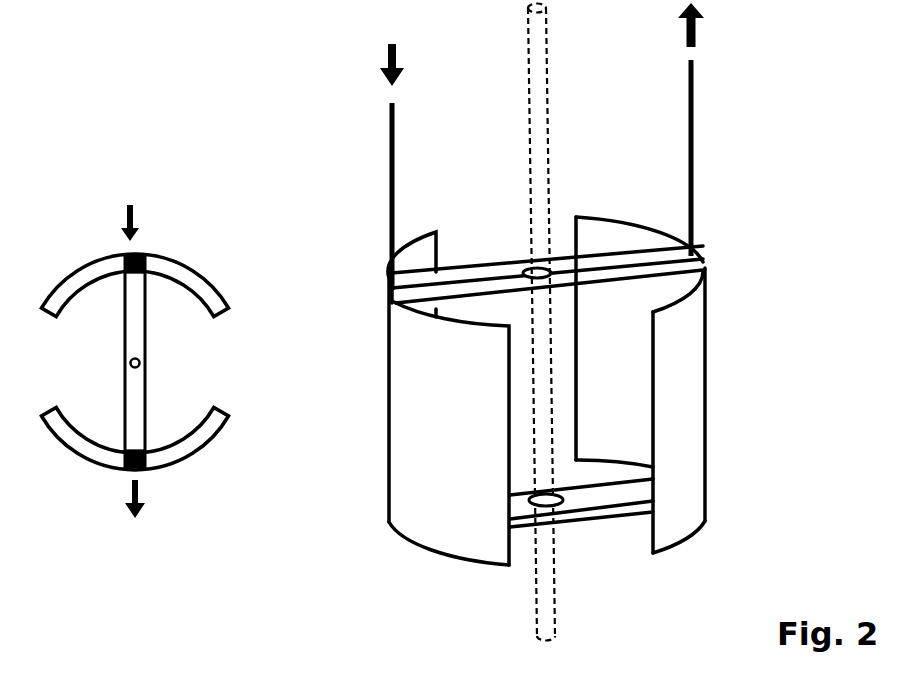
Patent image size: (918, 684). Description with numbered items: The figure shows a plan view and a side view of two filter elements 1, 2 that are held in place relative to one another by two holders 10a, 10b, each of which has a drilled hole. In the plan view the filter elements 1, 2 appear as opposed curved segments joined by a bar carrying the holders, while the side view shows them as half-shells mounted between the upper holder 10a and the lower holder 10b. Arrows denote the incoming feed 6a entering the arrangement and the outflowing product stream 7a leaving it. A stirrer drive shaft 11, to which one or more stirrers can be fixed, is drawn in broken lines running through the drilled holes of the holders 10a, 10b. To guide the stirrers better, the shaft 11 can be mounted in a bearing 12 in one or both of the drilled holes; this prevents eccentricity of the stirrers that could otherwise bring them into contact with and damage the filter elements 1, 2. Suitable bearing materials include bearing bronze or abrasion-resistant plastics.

The filter element 1 is at (276, 398).
The filter element 2 is at (371, 385).
The incoming feed 6a is at (262, 167).
The outflowing product stream 7a is at (434, 264).
The holder 10a is at (414, 352).
The holder 10b is at (581, 522).
The stirrer drive shaft 11 is at (560, 322).
The bearing 12 is at (541, 508).